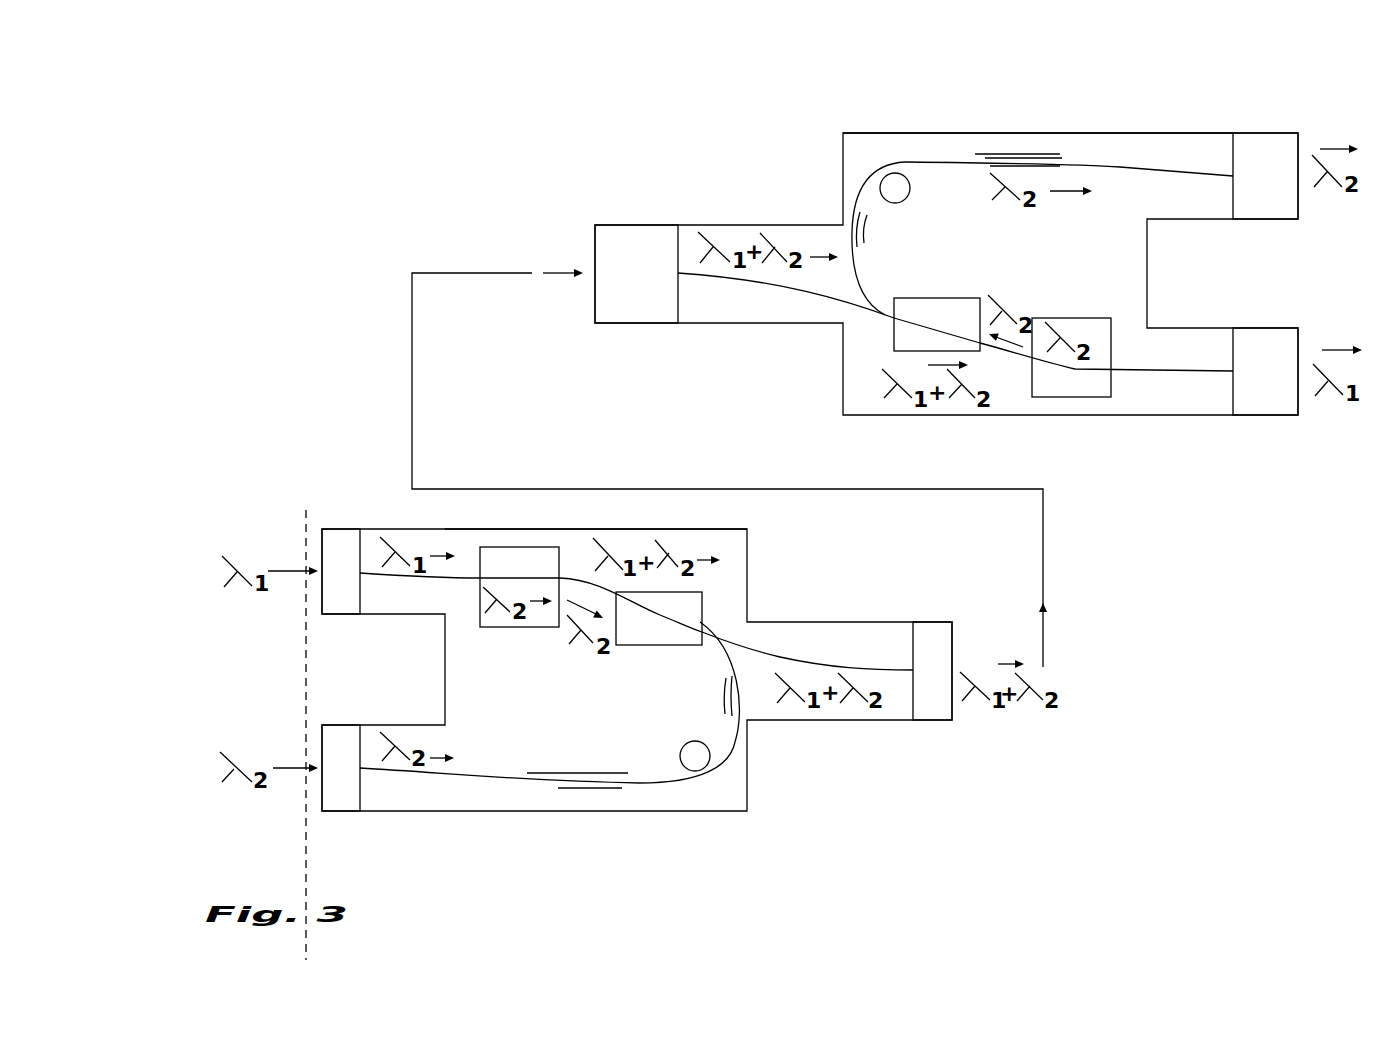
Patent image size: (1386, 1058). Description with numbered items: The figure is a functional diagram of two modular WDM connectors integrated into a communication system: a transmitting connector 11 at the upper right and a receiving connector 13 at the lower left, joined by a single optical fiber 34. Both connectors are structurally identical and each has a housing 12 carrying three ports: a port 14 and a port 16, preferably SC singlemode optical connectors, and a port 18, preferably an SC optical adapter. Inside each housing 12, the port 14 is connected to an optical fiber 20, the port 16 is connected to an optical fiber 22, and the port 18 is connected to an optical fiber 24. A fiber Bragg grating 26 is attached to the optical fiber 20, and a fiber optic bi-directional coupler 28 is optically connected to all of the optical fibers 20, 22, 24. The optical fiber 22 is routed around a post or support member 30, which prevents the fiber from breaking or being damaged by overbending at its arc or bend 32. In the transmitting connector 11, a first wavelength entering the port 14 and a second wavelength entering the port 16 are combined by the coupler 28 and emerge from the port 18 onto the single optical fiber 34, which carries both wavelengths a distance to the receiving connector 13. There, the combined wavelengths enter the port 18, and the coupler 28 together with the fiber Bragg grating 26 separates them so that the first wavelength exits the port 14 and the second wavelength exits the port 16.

The transmitting WDM connector 11 is at (1173, 98).
The housing 12 is at (952, 131).
The receiving WDM connector 13 is at (543, 871).
The port 14 is at (1274, 355).
The port 16 is at (1265, 160).
The port 18 is at (628, 228).
The optical fiber 20 is at (1163, 368).
The optical fiber 22 is at (1171, 170).
The optical fiber 24 is at (767, 285).
The fiber Bragg grating 26 is at (1070, 400).
The fiber optic bi-directional coupler 28 is at (922, 298).
The post or support member 30 is at (893, 183).
The arc or bend 32 is at (942, 162).
The single optical fiber 34 is at (412, 365).